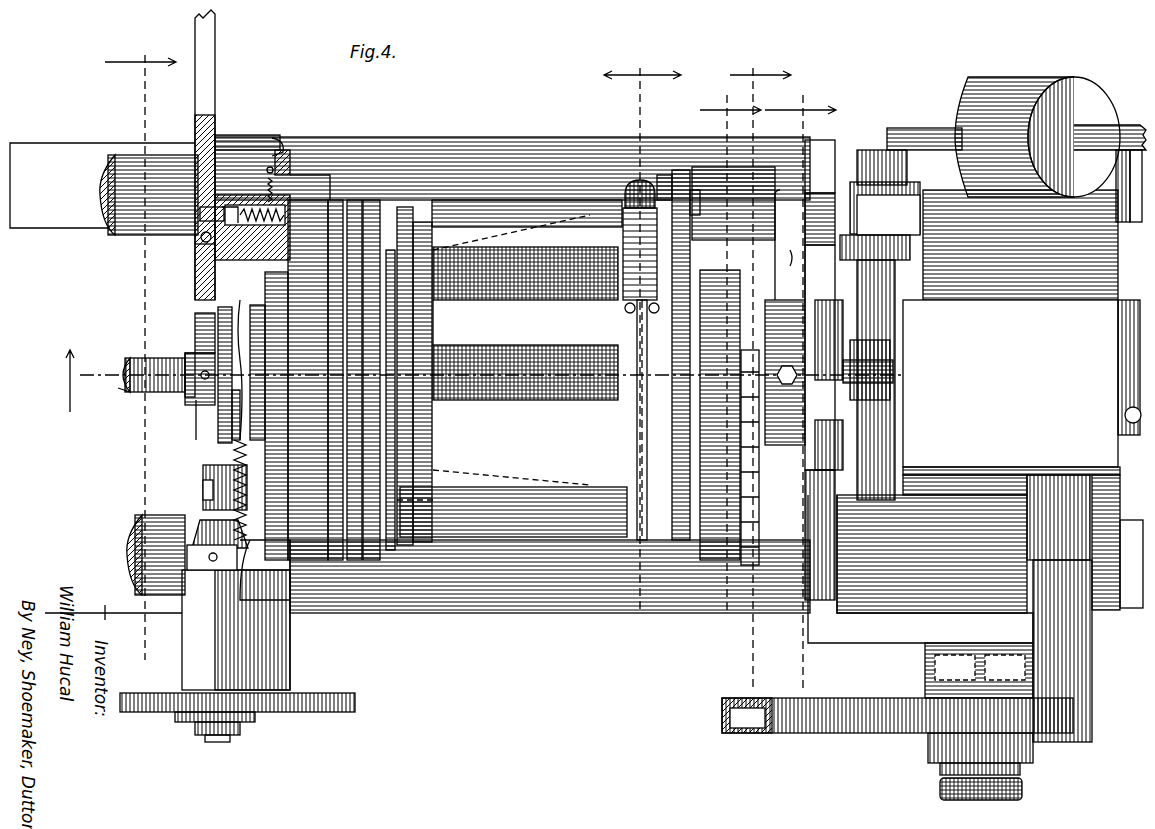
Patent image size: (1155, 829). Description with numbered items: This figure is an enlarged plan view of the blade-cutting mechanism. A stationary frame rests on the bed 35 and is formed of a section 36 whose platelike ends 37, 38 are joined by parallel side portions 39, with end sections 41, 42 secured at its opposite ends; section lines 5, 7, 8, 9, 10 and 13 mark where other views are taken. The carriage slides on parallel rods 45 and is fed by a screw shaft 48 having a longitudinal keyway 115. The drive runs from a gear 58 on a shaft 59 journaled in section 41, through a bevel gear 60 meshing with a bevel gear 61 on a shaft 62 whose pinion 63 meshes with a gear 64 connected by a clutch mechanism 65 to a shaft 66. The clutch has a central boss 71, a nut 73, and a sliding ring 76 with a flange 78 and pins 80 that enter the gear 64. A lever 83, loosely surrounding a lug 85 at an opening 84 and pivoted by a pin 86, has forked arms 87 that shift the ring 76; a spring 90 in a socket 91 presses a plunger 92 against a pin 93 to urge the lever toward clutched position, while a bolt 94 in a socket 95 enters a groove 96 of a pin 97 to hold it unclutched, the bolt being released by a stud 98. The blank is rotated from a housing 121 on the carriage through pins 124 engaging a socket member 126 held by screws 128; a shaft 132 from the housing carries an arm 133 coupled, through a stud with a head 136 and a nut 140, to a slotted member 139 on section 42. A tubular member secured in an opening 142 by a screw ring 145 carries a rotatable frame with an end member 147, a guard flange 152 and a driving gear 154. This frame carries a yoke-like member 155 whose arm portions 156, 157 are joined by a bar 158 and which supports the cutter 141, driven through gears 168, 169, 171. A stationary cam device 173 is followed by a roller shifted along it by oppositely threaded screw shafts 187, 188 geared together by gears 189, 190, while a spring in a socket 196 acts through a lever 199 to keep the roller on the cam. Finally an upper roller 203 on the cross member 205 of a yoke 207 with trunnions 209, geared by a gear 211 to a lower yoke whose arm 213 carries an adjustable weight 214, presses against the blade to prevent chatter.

The section line 5 is at (141, 49).
The section line 7 is at (580, 374).
The section line 8 is at (750, 54).
The section line 9 is at (721, 99).
The section line 10 is at (639, 56).
The section line 13 is at (804, 87).
The bed 35 is at (38, 150).
The section 36 is at (430, 150).
The platelike end portion 37 is at (308, 380).
The end portion 38 is at (790, 245).
The side portions 39 is at (497, 160).
The end section 41 is at (290, 638).
The end section 42 is at (820, 140).
The rods 45 is at (120, 160).
The screw shaft 48 is at (128, 362).
The gear 58 is at (315, 693).
The shaft 59 is at (225, 742).
The bevel gear 60 is at (192, 544).
The bevel gear 61 is at (232, 452).
The shaft 62 is at (203, 490).
The pinion 63 is at (195, 562).
The gear 64 is at (262, 288).
The clutch mechanism 65 is at (175, 350).
The shaft 66 is at (185, 385).
The central boss 71 is at (218, 425).
The nut 73 is at (182, 400).
The ring 76 is at (200, 420).
The flange 78 is at (236, 305).
The pins 80 is at (254, 312).
The lever 83 is at (208, 52).
The opening 84 is at (200, 258).
The lug 85 is at (200, 238).
The pin 86 is at (200, 246).
The arms 87 is at (190, 420).
The spring 90 is at (248, 210).
The socket 91 is at (300, 204).
The plunger 92 is at (231, 193).
The pin 93 is at (205, 210).
The bolt 94 is at (292, 158).
The socket 95 is at (282, 192).
The groove 96 is at (270, 138).
The pin 97 is at (236, 135).
The stud 98 is at (282, 178).
The keyway 115 is at (125, 395).
The housing 121 is at (1022, 397).
The pins 124 is at (835, 318).
The socket member 126 is at (770, 330).
The screws 128 is at (789, 360).
The shaft 132 is at (1065, 636).
The arm 133 is at (780, 693).
The head 136 is at (940, 742).
The member 139 is at (935, 672).
The nut 140 is at (1022, 788).
The cutter 141 is at (750, 570).
The opening 142 is at (812, 630).
The screw ring 145 is at (280, 352).
The end member 147 is at (680, 180).
The curved guard flange 152 is at (528, 215).
The gear 154 is at (338, 552).
The yoke-like member 155 is at (482, 487).
The arm portion 156 is at (717, 415).
The arm portion 157 is at (408, 462).
The bar 158 is at (530, 487).
The gear 168 is at (340, 362).
The gear 169 is at (372, 548).
The gear 171 is at (358, 556).
The cam device 173 is at (558, 230).
The screw shaft 187 is at (520, 300).
The screw shaft 188 is at (482, 395).
The gear 189 is at (433, 350).
The gear 190 is at (423, 222).
The socket 196 is at (625, 310).
The lever 199 is at (636, 345).
The upper roller 203 is at (890, 362).
The cross member 205 is at (895, 280).
The yoke 207 is at (905, 248).
The trunnions 209 is at (885, 208).
The gear 211 is at (900, 175).
The arm 213 is at (940, 128).
The weight 214 is at (1030, 90).